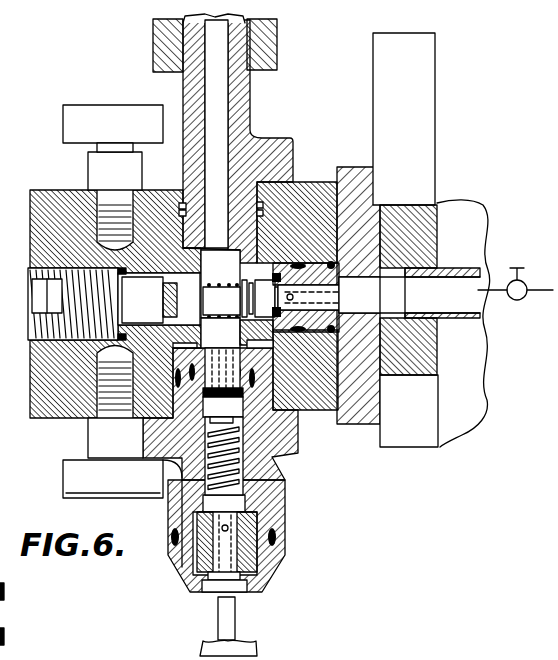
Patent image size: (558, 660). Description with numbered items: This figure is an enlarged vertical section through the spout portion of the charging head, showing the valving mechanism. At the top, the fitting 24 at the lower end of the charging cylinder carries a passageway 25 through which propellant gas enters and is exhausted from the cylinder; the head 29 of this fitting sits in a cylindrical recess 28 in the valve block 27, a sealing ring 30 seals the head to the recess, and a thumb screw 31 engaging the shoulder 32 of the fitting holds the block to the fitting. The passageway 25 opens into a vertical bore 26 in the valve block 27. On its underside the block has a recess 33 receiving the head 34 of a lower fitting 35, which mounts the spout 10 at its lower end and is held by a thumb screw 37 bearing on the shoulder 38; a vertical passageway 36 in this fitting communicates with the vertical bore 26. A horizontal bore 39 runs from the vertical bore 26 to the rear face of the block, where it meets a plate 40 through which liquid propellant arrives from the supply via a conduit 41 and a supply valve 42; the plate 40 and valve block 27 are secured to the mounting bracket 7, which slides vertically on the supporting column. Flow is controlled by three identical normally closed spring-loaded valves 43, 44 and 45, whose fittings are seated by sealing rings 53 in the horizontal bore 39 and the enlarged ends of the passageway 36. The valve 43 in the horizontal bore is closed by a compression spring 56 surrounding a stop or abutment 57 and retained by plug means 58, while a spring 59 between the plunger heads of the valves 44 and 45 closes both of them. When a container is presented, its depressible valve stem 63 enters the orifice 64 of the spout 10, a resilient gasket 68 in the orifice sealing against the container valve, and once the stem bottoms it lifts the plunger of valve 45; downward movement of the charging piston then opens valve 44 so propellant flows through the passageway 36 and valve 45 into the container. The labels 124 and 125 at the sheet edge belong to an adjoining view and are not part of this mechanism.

The mounting bracket 7 is at (484, 200).
The spout 10 is at (278, 545).
The fitting 24 is at (250, 110).
The passageway 25 is at (220, 90).
The vertical bore 26 is at (228, 252).
The valve block 27 is at (30, 210).
The cylindrical recess 28 is at (266, 194).
The head 29 is at (182, 204).
The sealing ring 30 is at (259, 214).
The thumb screw 31 is at (73, 110).
The shoulder 32 is at (172, 133).
The recess 33 is at (272, 366).
The head 34 is at (276, 397).
The fitting 35 is at (276, 465).
The vertical passageway 36 is at (244, 438).
The thumb screw 37 is at (88, 492).
The shoulder 38 is at (148, 462).
The horizontal bore 39 is at (245, 316).
The plate 40 is at (347, 168).
The conduit 41 is at (447, 268).
The supply valve 42 is at (510, 300).
The valve 43 is at (340, 287).
The valve 44 is at (234, 345).
The valve 45 is at (213, 552).
The sealing rings 53 is at (297, 263).
The compression spring 56 is at (228, 285).
The stop or abutment 57 is at (180, 260).
The plug means 58 is at (170, 345).
The spring 59 is at (209, 441).
The valve stem 63 is at (236, 620).
The orifice 64 is at (222, 586).
The resilient gasket 68 is at (245, 590).
The element 124 is at (0, 609).
The element 125 is at (0, 647).